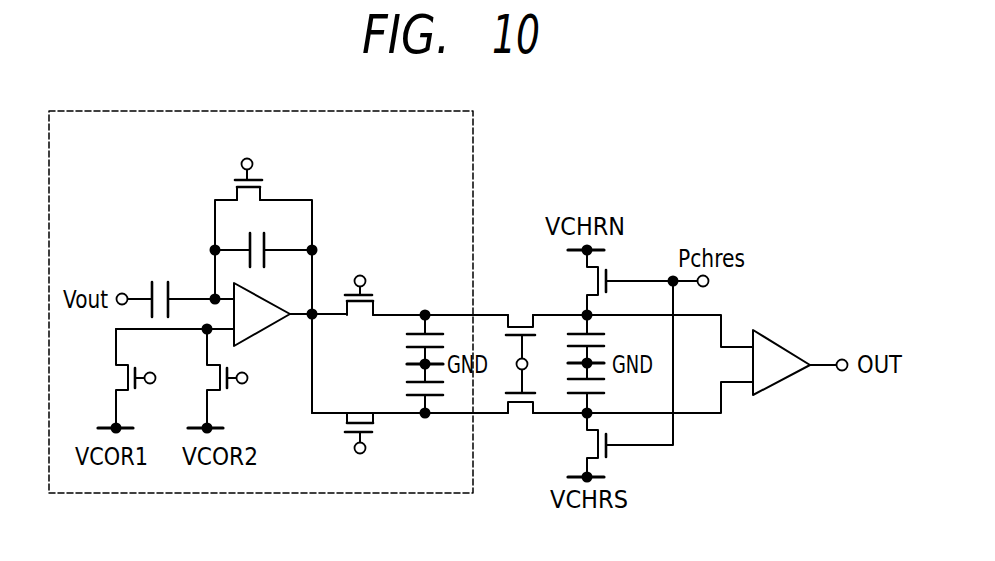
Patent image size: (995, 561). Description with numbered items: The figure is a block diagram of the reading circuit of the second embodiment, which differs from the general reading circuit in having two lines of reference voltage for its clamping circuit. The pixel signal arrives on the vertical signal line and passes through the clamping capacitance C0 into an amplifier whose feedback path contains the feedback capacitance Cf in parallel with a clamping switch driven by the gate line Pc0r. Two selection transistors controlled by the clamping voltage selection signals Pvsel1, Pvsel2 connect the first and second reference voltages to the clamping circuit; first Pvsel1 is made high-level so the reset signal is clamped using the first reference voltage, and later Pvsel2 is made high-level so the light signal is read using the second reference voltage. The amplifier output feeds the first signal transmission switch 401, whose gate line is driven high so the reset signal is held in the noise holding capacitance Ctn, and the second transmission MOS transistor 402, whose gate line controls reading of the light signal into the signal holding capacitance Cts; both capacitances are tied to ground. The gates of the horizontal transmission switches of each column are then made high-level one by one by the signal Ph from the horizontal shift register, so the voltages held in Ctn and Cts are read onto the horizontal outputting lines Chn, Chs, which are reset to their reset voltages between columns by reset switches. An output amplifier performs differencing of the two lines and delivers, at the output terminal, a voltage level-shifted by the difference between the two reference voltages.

The first signal transmission switch 401 is at (375, 300).
The second transmission MOS transistor 402 is at (375, 428).
The clamping capacitance C0 is at (158, 281).
The feedback capacitance Cf is at (255, 236).
The gate line of clamping switch Pc0r is at (249, 165).
The clamping voltage selection signal Pvsel1 is at (149, 378).
The clamping voltage selection signal Pvsel2 is at (242, 378).
The noise holding capacitance Ctn is at (405, 339).
The signal holding capacitance Cts is at (405, 389).
The horizontal transmission switch signal Ph is at (532, 364).
The horizontal outputting line Chn is at (610, 335).
The horizontal outputting line Chs is at (609, 395).